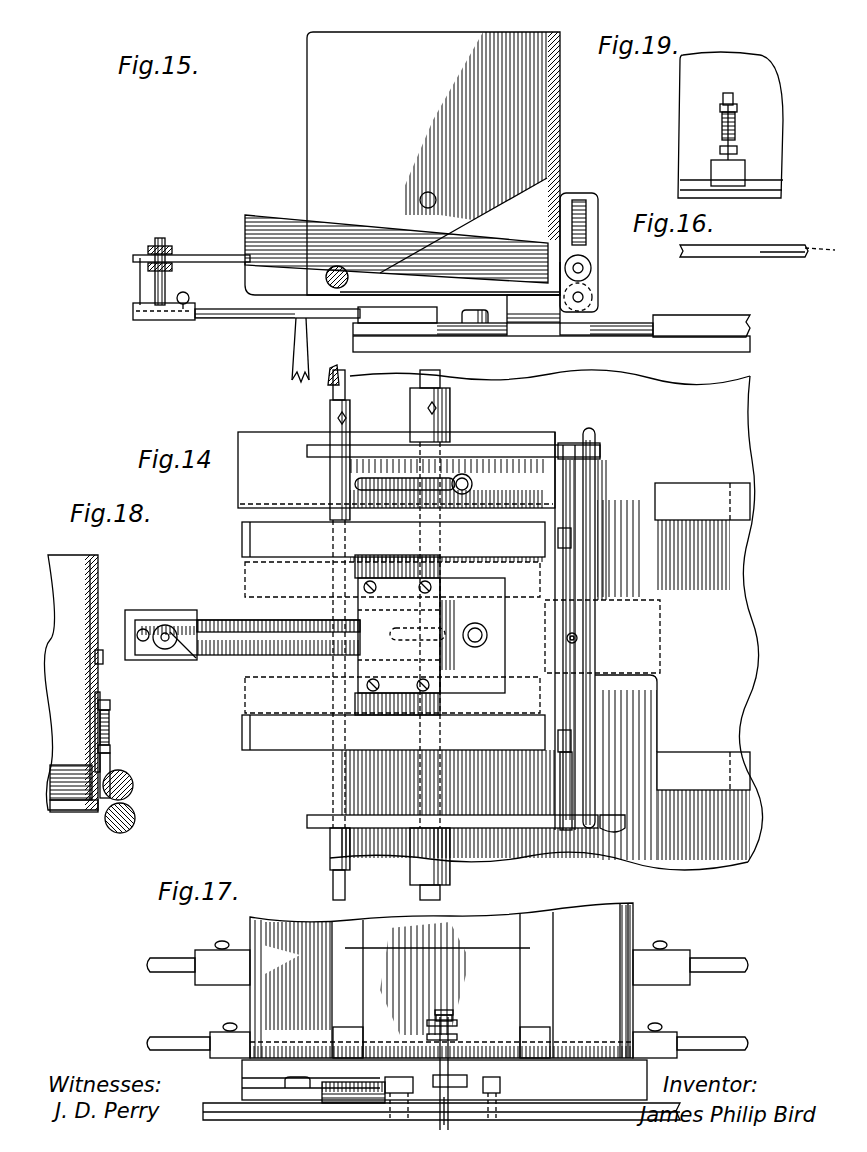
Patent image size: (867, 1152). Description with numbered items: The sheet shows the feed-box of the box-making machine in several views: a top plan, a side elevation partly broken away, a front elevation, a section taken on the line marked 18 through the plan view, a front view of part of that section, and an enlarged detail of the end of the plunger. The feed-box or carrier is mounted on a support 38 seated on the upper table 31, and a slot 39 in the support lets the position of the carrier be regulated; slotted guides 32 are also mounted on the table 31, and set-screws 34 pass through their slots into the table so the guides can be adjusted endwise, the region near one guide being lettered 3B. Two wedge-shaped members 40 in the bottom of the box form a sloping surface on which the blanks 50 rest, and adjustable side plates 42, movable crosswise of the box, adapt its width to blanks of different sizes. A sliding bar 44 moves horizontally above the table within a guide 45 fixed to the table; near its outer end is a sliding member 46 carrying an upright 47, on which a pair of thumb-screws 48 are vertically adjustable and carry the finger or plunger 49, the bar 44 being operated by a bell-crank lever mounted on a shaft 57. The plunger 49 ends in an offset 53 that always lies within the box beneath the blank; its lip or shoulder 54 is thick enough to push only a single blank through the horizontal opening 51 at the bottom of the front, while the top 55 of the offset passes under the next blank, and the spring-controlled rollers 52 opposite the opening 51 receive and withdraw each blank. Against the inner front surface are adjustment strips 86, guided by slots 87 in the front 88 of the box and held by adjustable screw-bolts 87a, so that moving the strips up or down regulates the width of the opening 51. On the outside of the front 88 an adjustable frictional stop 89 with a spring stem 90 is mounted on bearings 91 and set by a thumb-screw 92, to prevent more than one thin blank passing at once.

In FIG. 15, the adjustable side plates 42 is at (438, 46).
In FIG. 14, the adjustable side plates 42 is at (312, 458).
In FIG. 17, the adjustable side plates 42 is at (320, 980).
In FIG. 15, the blanks 50 is at (266, 216).
In FIG. 14, the blanks 50 is at (360, 581).
In FIG. 17, the blanks 50 is at (440, 1115).
In FIG. 15, the wedge-shaped members 40 is at (255, 279).
In FIG. 14, the wedge-shaped members 40 is at (278, 545).
In FIG. 17, the wedge-shaped members 40 is at (346, 1030).
In FIG. 15, the spring-controlled rollers 52 is at (592, 268).
In FIG. 14, the spring-controlled rollers 52 is at (580, 778).
In FIG. 18, the spring-controlled rollers 52 is at (133, 790).
In FIG. 15, the horizontal slot or opening 51 is at (593, 296).
In FIG. 19, the horizontal slot or opening 51 is at (762, 185).
In FIG. 18, the horizontal slot or opening 51 is at (90, 812).
In FIG. 15, the finger or plunger 49 is at (200, 262).
In FIG. 14, the finger or plunger 49 is at (232, 622).
In FIG. 17, the finger or plunger 49 is at (445, 1015).
In FIG. 15, the thumb-screws 48 is at (148, 250).
In FIG. 14, the thumb-screws 48 is at (166, 629).
In FIG. 17, the thumb-screws 48 is at (455, 1022).
In FIG. 15, the upright 47 is at (155, 286).
In FIG. 14, the upright 47 is at (422, 638).
In FIG. 17, the upright 47 is at (495, 930).
In FIG. 15, the sliding member 46 is at (160, 320).
In FIG. 14, the sliding member 46 is at (152, 614).
In FIG. 17, the sliding member 46 is at (465, 1060).
In FIG. 15, the sliding bar 44 is at (230, 320).
In FIG. 14, the sliding bar 44 is at (300, 636).
In FIG. 17, the sliding bar 44 is at (400, 1072).
In FIG. 15, the guide 45 is at (370, 313).
In FIG. 14, the guide 45 is at (372, 637).
In FIG. 17, the guide 45 is at (413, 1079).
In FIG. 15, the set-screws 34 is at (478, 336).
In FIG. 14, the set-screws 34 is at (479, 624).
In FIG. 15, the support 38 is at (702, 322).
In FIG. 14, the support 38 is at (371, 470).
In FIG. 17, the support 38 is at (375, 1108).
In FIG. 19, the front of the box 88 is at (758, 88).
In FIG. 18, the front of the box 88 is at (98, 602).
In FIG. 19, the frictional stop 89 is at (745, 172).
In FIG. 18, the frictional stop 89 is at (110, 770).
In FIG. 19, the spring stem 90 is at (737, 122).
In FIG. 18, the spring stem 90 is at (110, 718).
In FIG. 19, the bearings 91 is at (720, 149).
In FIG. 18, the bearings 91 is at (110, 748).
In FIG. 19, the thumb-screw 92 is at (730, 93).
In FIG. 18, the thumb-screw 92 is at (110, 703).
In FIG. 16, the offset 53 is at (806, 257).
In FIG. 16, the lip or shoulder 54 is at (805, 236).
In FIG. 16, the top of the offset 55 is at (770, 236).
In FIG. 14, the slot 39 is at (400, 492).
In FIG. 14, the shaft 57 is at (555, 485).
In FIG. 14, the adjustable screw-bolts 87a is at (572, 538).
In FIG. 18, the adjustable screw-bolts 87a is at (95, 656).
In FIG. 18, the slots 87 is at (92, 640).
In FIG. 14, the adjustment strips 86 is at (553, 555).
In FIG. 18, the adjustment strips 86 is at (95, 700).
In FIG. 17, the adjustment strips 86 is at (437, 950).
In FIG. 14, the bar 18 is at (555, 740).
In FIG. 14, the guides 32 is at (710, 497).
In FIG. 14, the frame part 3B is at (685, 572).
In FIG. 17, the upper table 31 is at (555, 1114).